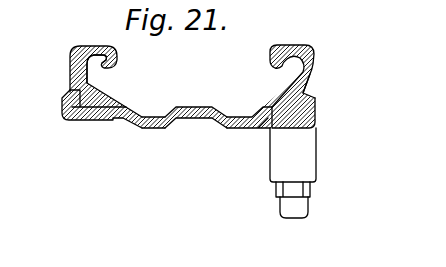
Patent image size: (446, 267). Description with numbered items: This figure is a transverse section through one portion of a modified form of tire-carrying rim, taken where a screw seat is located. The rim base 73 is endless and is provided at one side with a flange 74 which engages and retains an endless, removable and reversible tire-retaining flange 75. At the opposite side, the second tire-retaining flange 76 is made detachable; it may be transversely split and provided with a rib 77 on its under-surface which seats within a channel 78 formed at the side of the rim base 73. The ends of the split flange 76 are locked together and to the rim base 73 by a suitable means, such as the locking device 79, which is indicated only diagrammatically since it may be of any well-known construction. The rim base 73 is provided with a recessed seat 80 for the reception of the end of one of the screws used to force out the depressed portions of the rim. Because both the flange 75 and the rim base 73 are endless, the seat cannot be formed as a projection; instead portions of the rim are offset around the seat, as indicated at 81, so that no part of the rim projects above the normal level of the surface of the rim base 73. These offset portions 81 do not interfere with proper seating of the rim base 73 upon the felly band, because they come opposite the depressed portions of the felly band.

The rim base 73 is at (82, 121).
The flange 74 is at (71, 91).
The tire-retaining flange 75 is at (89, 80).
The second tire-retaining flange 76 is at (280, 76).
The rib 77 is at (306, 98).
The channel 78 is at (318, 122).
The locking device 79 is at (300, 149).
The recessed seat 80 is at (187, 122).
The offset portion 81 is at (137, 126).